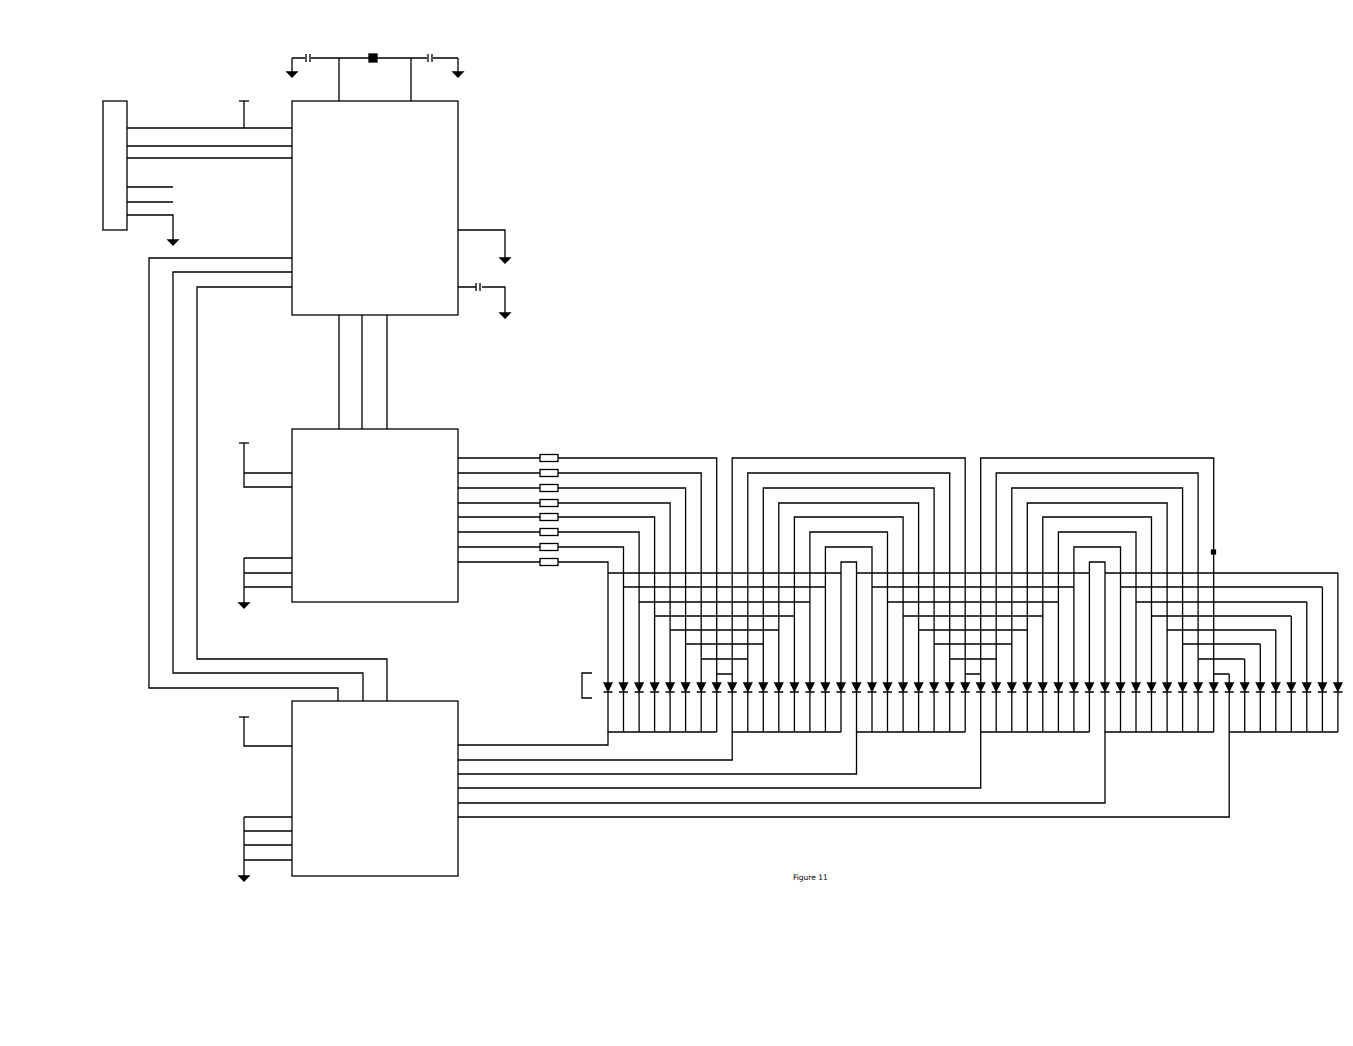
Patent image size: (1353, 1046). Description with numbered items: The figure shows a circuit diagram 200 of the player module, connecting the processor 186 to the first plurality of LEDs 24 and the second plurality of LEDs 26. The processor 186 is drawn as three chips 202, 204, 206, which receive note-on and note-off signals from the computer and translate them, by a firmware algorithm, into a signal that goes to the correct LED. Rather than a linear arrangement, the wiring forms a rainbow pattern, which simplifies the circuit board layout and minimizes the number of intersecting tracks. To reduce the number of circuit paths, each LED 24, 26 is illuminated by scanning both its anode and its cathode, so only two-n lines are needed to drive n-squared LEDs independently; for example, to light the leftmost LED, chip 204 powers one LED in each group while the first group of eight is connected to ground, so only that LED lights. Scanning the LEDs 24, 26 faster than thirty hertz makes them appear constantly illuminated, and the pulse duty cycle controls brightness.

The processor 186 is at (256, 74).
The circuit diagram 200 is at (927, 144).
The chip 202 is at (458, 143).
The chip 204 is at (431, 426).
The chip 206 is at (425, 698).
The first plurality of LEDs 24 is at (582, 686).
The second plurality of LEDs 26 is at (905, 637).